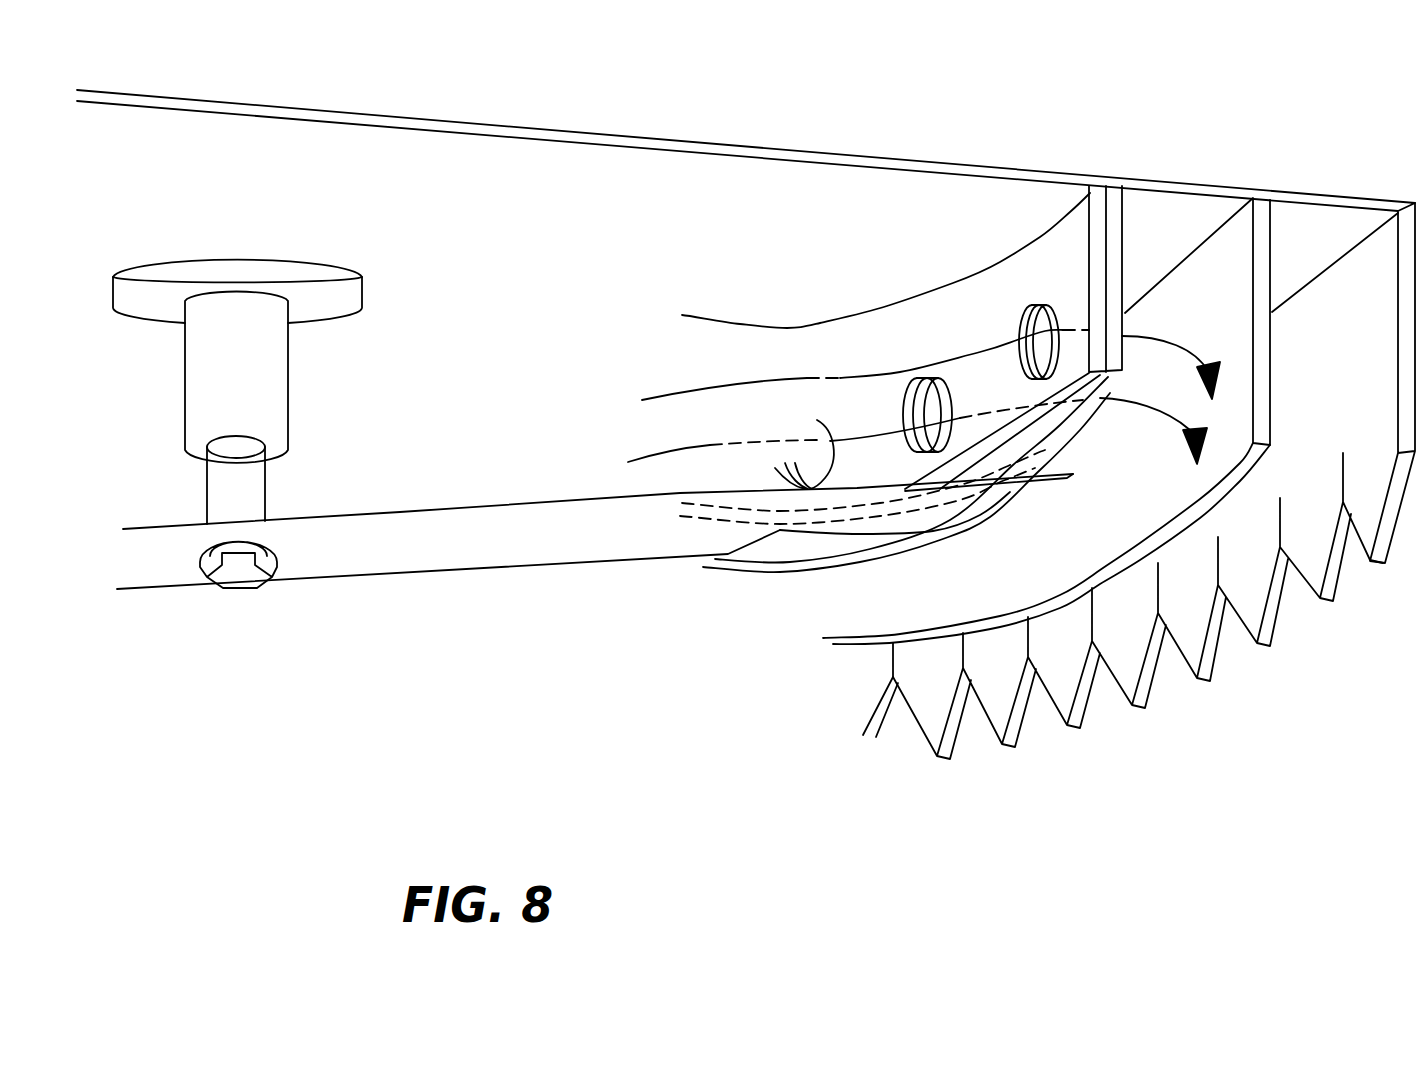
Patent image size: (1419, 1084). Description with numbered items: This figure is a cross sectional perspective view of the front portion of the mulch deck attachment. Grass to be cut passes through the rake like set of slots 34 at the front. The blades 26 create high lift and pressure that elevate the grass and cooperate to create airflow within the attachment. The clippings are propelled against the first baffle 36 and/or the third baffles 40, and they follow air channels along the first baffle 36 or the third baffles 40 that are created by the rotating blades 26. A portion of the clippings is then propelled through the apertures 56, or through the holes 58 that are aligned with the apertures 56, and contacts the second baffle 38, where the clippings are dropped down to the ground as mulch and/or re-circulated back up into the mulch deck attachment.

The blades 26 is at (377, 550).
The rake like set of slots 34 is at (1320, 553).
The first baffle 36 is at (1078, 265).
The second baffle 38 is at (1237, 241).
The third baffles 40 is at (1113, 275).
The apertures 56 is at (943, 416).
The holes 58 is at (1025, 338).